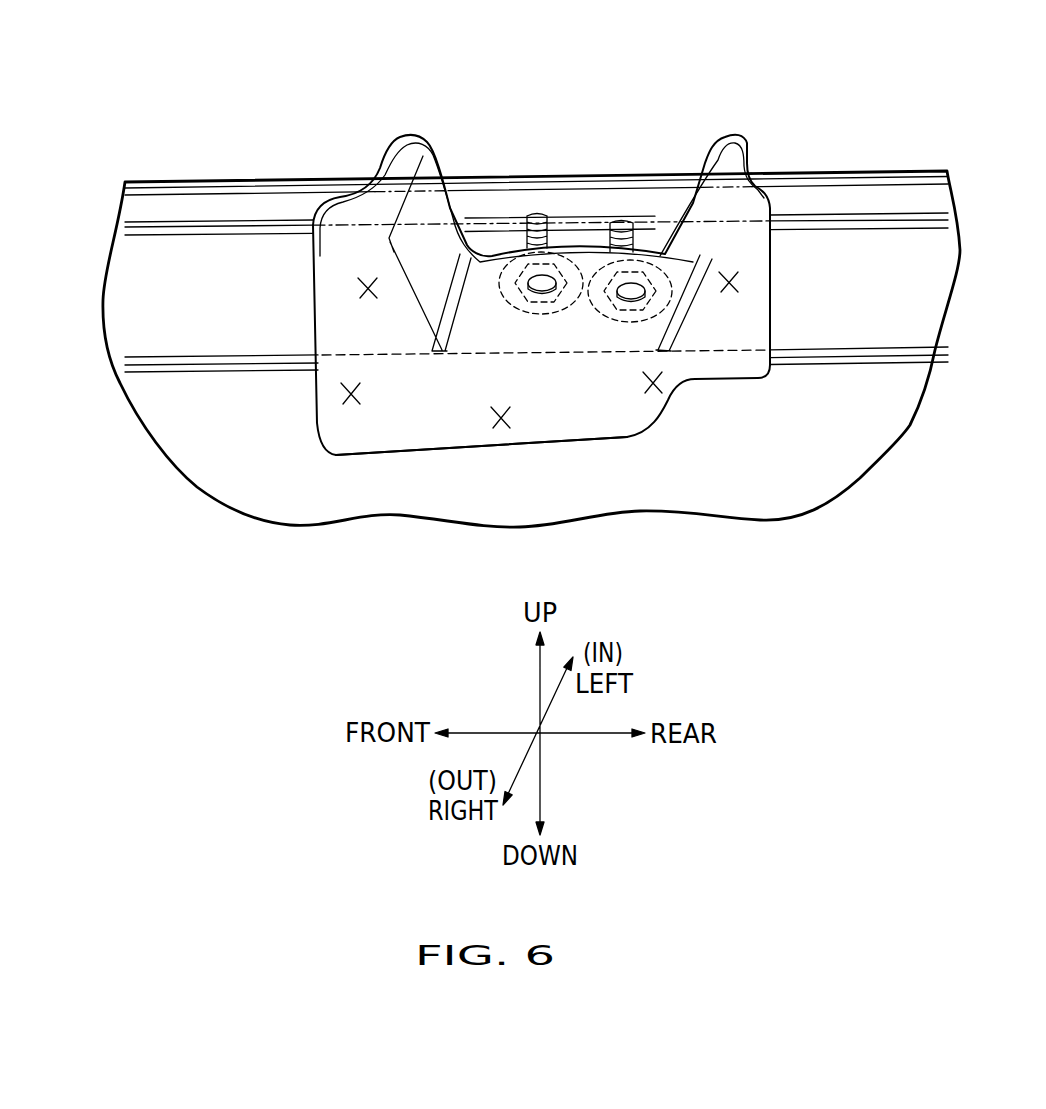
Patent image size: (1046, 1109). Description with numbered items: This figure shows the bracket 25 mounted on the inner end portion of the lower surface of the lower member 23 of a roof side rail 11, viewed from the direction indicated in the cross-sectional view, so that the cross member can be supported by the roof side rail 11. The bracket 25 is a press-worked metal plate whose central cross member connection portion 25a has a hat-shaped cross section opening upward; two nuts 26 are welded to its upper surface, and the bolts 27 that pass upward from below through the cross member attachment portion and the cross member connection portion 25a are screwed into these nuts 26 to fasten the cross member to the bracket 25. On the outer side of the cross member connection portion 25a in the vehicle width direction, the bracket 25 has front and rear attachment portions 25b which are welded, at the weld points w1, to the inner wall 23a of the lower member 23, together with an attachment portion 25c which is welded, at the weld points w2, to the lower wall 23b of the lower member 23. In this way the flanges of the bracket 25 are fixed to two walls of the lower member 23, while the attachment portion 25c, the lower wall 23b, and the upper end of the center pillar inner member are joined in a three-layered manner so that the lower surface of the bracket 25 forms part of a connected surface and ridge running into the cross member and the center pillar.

The roof side rail 11 is at (241, 172).
The lower member 23 is at (212, 497).
The inner wall 23a is at (130, 304).
The lower wall 23b is at (350, 498).
The bracket 25 is at (622, 447).
The cross member connection portion 25a is at (495, 270).
The front and rear attachment portions 25b is at (330, 267).
The attachment portion 25c is at (560, 420).
The nuts 26 is at (627, 233).
The bolts 27 is at (541, 316).
The welding w1 is at (358, 293).
The welding w2 is at (337, 398).